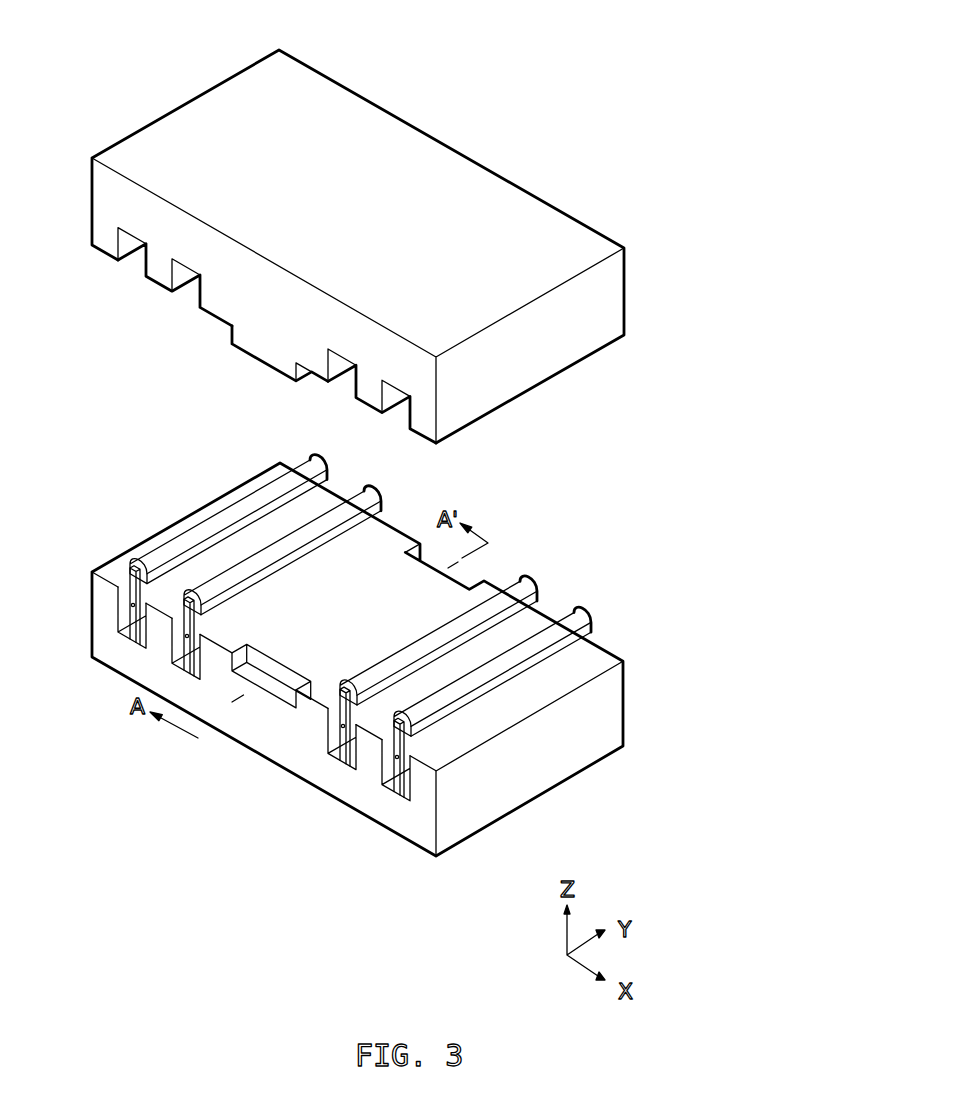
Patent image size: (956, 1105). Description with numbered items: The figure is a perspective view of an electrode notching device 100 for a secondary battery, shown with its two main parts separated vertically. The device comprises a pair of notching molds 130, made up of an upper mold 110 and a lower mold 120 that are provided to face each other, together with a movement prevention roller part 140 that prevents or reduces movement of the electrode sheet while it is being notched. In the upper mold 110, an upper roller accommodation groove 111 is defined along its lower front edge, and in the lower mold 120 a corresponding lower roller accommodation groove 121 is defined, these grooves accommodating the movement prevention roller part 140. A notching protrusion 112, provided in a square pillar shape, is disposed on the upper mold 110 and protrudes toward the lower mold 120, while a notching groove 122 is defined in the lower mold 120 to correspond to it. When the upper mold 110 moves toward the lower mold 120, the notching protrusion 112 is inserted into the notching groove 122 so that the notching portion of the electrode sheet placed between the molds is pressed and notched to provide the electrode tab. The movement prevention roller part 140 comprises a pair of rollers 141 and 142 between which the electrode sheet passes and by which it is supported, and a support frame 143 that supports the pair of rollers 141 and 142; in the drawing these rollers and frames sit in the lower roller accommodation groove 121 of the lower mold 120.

The electrode notching device 100 is at (597, 29).
The upper mold 110 is at (581, 378).
The upper roller accommodation groove 111 is at (142, 258).
The notching protrusion 112 is at (233, 334).
The lower mold 120 is at (613, 646).
The lower roller accommodation groove 121 is at (118, 620).
The notching groove 122 is at (272, 687).
The pair of notching molds 130 is at (703, 396).
The movement prevention roller part 140 is at (703, 738).
The roller 141 is at (494, 675).
The roller 142 is at (451, 721).
The support frame 143 is at (435, 768).